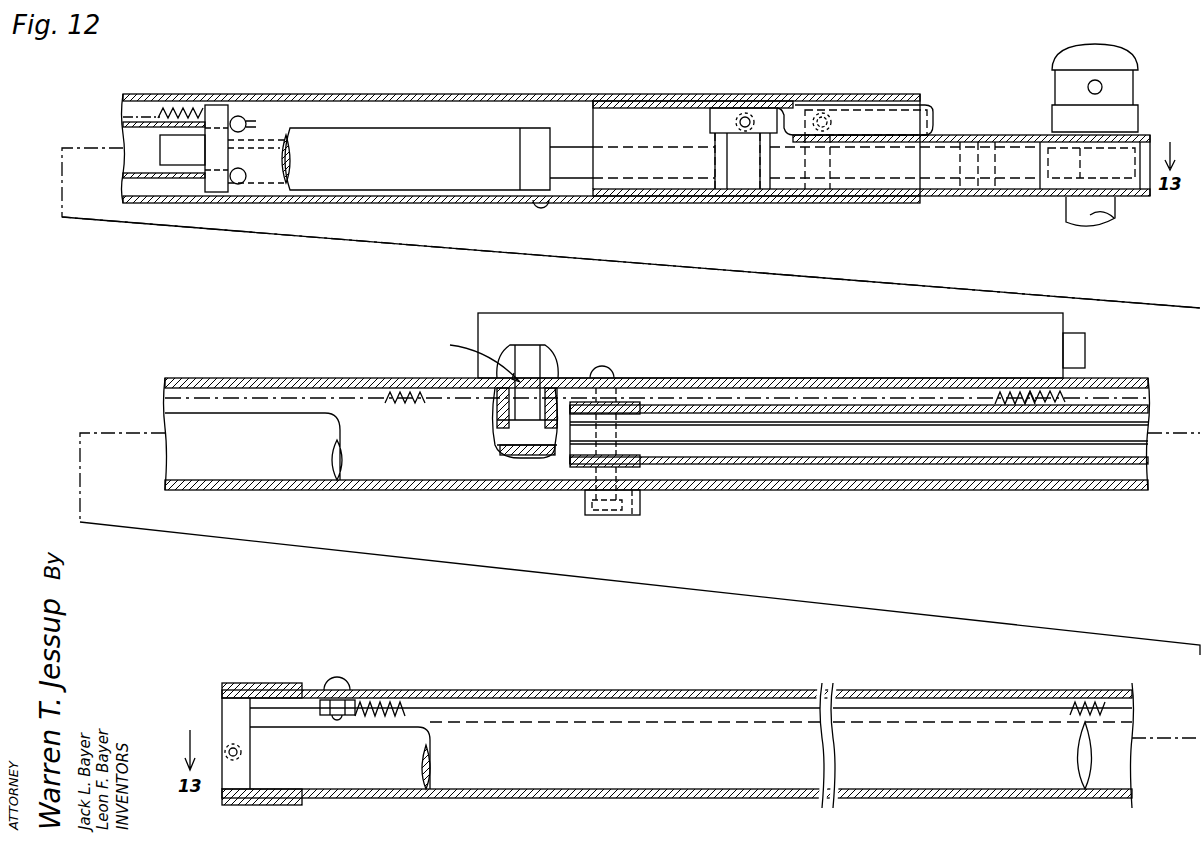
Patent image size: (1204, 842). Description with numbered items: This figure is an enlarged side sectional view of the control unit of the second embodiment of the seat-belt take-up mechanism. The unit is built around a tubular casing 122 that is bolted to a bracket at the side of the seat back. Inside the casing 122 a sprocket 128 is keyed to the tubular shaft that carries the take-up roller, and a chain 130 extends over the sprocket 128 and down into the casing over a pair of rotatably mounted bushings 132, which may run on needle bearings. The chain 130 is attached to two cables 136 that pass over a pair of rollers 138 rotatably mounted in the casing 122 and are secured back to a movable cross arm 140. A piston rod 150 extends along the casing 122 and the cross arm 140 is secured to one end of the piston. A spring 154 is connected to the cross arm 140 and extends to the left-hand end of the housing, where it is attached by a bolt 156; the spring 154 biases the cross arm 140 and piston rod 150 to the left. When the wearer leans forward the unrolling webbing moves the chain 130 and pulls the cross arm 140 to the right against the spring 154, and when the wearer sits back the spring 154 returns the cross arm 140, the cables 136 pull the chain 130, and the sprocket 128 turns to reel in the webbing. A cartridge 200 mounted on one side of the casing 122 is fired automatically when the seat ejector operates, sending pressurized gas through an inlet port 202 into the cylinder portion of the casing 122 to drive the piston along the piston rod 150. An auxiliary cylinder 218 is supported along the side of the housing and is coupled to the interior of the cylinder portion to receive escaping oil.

The tubular casing 122 is at (520, 101).
The sprocket 128 is at (1118, 165).
The chain 130 is at (262, 158).
The bushings 132 is at (840, 108).
The cables 136 is at (255, 122).
The rollers 138 is at (583, 400).
The cross arm 140 is at (220, 118).
The piston rod 150 is at (888, 433).
The spring 154 is at (185, 110).
The bolt 156 is at (340, 690).
The cartridge 200 is at (710, 322).
The inlet port 202 is at (530, 398).
The auxiliary cylinder 218 is at (362, 775).